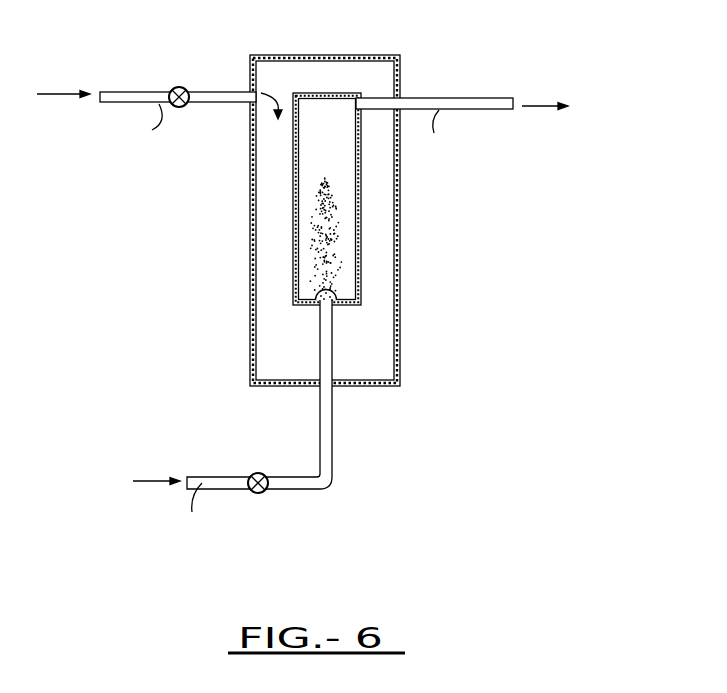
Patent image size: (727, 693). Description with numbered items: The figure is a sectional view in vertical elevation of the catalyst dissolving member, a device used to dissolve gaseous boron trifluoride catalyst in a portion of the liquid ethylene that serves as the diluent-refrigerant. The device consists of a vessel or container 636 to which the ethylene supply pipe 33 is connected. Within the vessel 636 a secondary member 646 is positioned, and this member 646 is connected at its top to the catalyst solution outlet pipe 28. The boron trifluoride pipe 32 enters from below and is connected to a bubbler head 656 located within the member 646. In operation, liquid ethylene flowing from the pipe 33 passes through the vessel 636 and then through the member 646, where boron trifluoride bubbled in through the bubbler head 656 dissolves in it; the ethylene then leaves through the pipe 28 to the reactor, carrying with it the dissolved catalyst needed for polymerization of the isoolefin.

The secondary member 646 is at (300, 32).
The vessel or container 636 is at (400, 222).
The bubbler head 656 is at (336, 295).
The ethylene supply pipe 33 is at (236, 91).
The catalyst solution outlet pipe 28 is at (428, 76).
The boron trifluoride pipe 32 is at (333, 451).